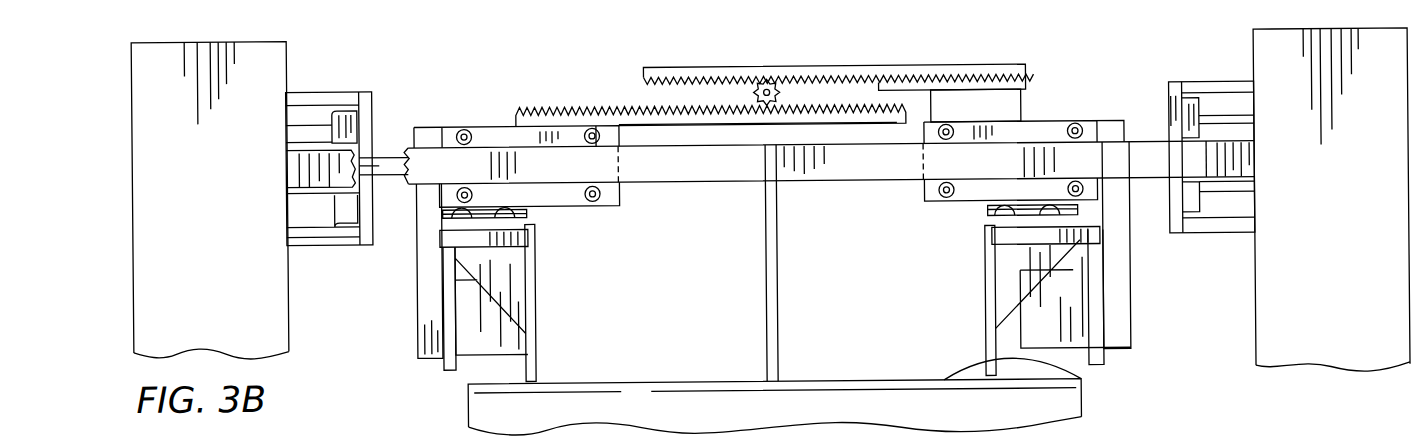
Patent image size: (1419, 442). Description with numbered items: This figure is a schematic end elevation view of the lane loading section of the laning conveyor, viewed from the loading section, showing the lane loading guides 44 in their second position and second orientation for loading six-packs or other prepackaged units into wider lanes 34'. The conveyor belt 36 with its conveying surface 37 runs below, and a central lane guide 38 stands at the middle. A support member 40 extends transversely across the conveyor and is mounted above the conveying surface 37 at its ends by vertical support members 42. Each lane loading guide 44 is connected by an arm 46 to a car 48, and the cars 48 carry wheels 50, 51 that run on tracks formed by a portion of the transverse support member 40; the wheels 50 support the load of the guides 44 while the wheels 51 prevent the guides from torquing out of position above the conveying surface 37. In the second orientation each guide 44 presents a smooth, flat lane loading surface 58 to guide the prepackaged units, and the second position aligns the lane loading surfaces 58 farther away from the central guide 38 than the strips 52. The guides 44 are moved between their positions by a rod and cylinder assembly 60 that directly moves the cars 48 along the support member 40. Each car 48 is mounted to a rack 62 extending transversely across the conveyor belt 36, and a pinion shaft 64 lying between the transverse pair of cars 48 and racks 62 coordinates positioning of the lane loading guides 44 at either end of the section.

The wider lane 34' is at (840, 295).
The conveyor belt 36 is at (597, 417).
The conveying surface 37 is at (1077, 377).
The central lane guide 38 is at (778, 211).
The support member 40 is at (704, 160).
The vertical support member 42 is at (230, 73).
The lane loading guide 44 is at (441, 377).
The arm 46 is at (428, 304).
The car 48 is at (495, 130).
The wheel 50 is at (462, 127).
The wheel 51 is at (458, 190).
The strip 52 is at (528, 209).
The lane loading surface 58 is at (533, 340).
The rod and cylinder assembly 60 is at (308, 135).
The rack 62 is at (603, 70).
The pinion shaft 64 is at (770, 82).